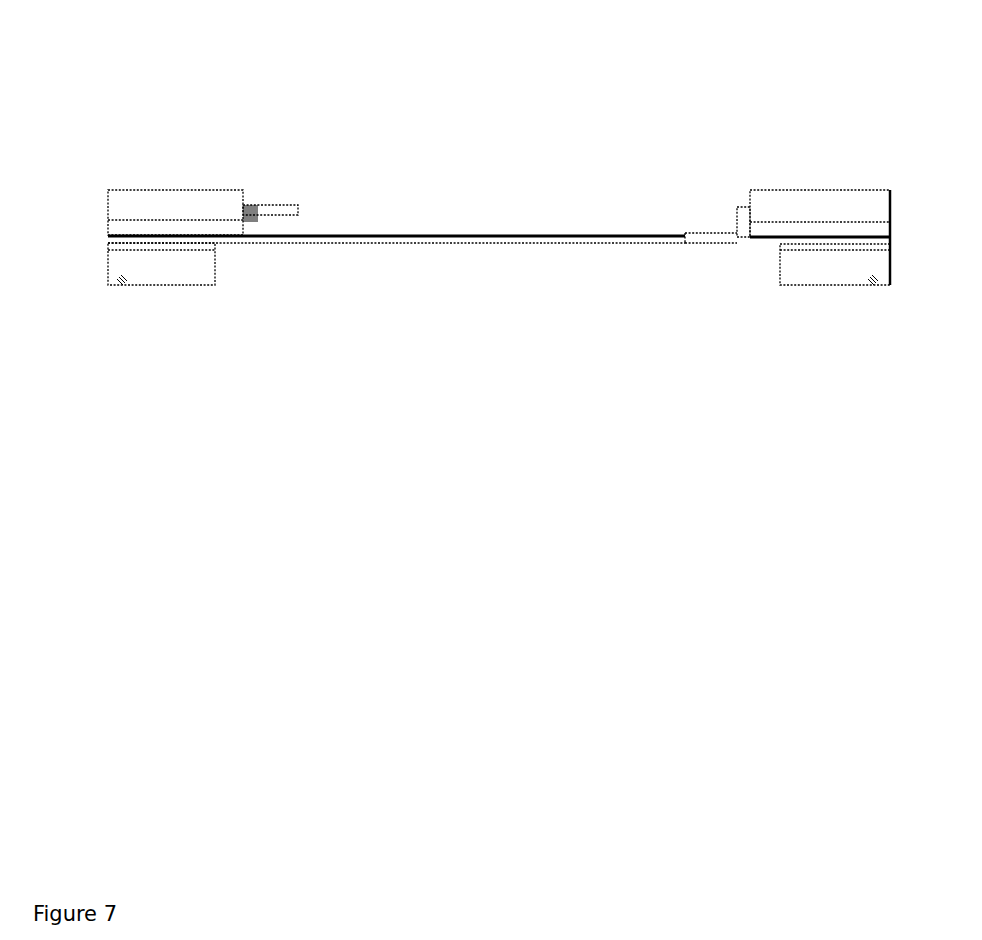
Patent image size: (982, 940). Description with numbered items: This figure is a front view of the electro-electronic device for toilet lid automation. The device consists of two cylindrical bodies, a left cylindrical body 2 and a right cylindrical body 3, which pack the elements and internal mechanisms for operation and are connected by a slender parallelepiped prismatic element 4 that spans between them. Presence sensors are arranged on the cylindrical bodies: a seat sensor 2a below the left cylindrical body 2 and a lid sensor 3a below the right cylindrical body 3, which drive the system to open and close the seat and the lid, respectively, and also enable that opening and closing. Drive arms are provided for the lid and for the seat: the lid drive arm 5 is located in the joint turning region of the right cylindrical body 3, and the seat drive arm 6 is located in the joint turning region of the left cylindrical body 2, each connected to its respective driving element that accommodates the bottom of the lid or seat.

The left cylindrical body 2 is at (170, 197).
The seat sensor 2a is at (124, 291).
The right cylindrical body 3 is at (790, 170).
The lid sensor 3a is at (872, 292).
The slender parallelepiped prismatic element 4 is at (515, 228).
The lid drive arm 5 is at (679, 246).
The seat drive arm 6 is at (298, 197).